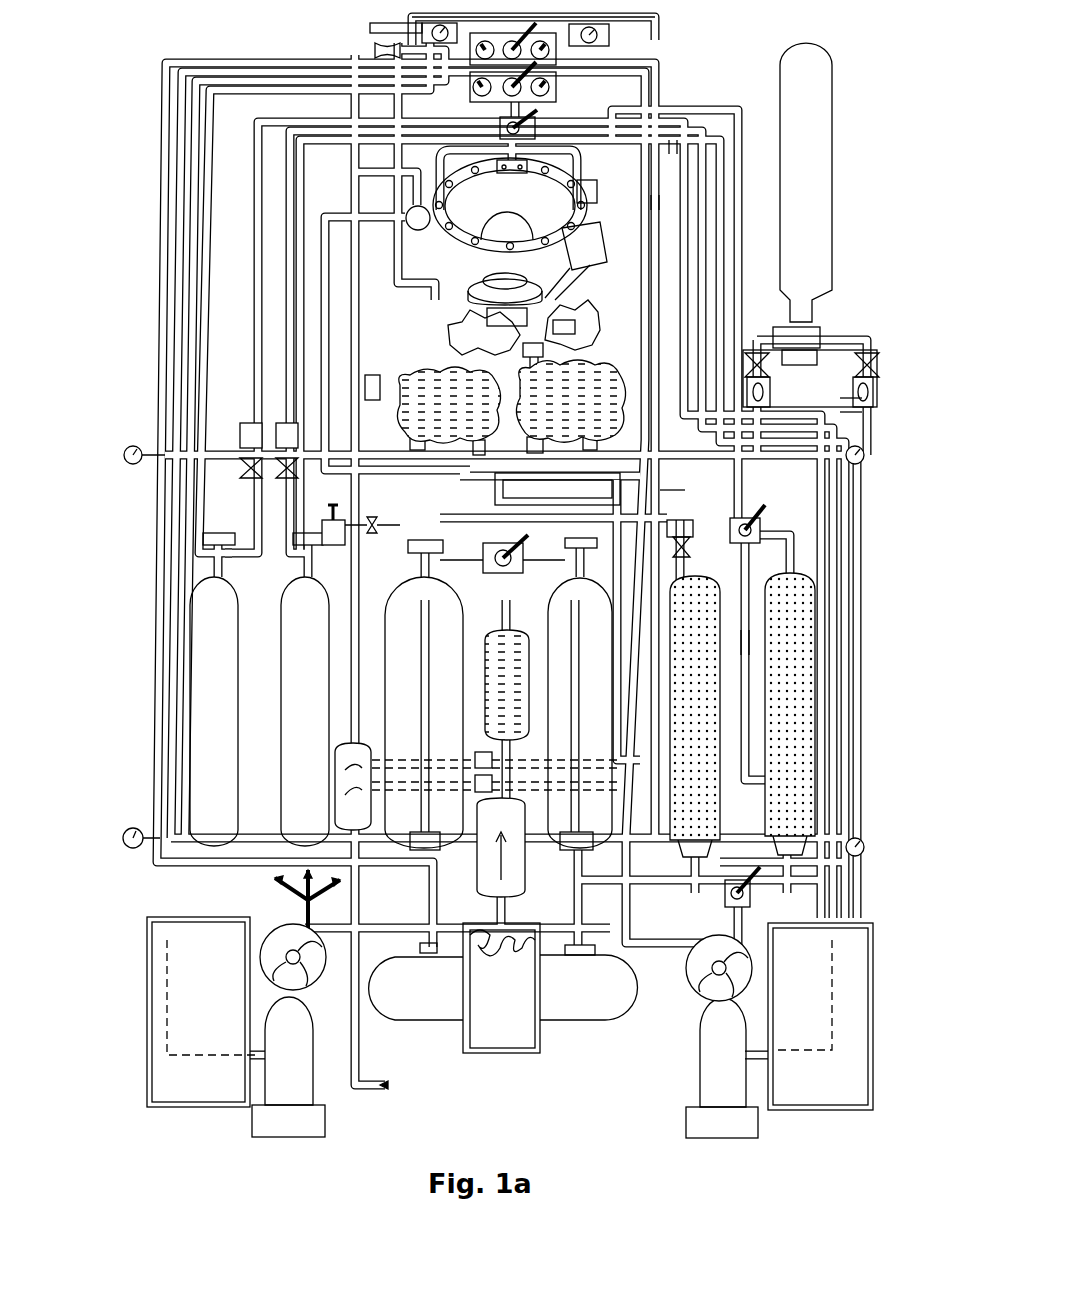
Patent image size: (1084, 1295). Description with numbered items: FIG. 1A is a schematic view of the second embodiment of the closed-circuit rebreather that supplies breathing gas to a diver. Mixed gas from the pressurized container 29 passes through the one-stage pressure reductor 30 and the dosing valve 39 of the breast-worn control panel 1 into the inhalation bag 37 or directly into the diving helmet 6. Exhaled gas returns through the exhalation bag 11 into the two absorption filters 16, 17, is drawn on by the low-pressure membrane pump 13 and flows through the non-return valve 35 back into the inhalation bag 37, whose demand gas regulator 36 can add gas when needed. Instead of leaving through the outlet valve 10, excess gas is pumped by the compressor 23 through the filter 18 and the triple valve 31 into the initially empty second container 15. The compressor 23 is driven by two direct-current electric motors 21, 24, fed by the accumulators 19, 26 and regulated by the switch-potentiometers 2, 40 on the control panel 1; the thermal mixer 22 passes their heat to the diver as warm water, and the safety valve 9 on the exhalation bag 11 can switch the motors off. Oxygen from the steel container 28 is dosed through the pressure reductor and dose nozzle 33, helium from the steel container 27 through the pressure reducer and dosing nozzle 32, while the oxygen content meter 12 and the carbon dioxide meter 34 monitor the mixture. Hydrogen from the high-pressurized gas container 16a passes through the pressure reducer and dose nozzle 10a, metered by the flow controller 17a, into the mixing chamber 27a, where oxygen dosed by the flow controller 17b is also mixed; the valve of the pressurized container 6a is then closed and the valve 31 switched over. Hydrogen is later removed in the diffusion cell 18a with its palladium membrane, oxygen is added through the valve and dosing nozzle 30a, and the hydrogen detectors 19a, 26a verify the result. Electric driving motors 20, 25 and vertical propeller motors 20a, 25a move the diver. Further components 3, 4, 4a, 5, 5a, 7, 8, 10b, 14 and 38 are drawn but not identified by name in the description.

The control panel 1 is at (470, 17).
The switch-potentiometer 2 is at (612, 43).
The upper gauge and valve unit 3 is at (557, 55).
The lower gauge and valve unit 4 is at (557, 85).
The supply line 4a is at (673, 147).
The shut-off valve 5 is at (553, 137).
The line 5a is at (655, 202).
The diving helmet 6 is at (563, 222).
The pressurized container 6a is at (800, 250).
The helmet neck ring 7 is at (540, 315).
The connecting piece 8 is at (563, 330).
The safety valve 9 is at (765, 342).
The outlet valve 10 is at (870, 362).
The one-stage pressure-reducer and dose-nozzle 10a is at (772, 388).
The valve body 10b is at (862, 386).
The exhalation bag 11 is at (862, 396).
The oxygen content sensor and meter 12 is at (862, 410).
The low-pressure membrane pump 13 is at (672, 490).
The valve 14 is at (745, 525).
The second mixed gas container 15 is at (587, 610).
The absorption filter 16 is at (797, 612).
The high-pressurized gas container 16a is at (752, 642).
The absorption filter 17 is at (700, 722).
The flow-controller 17a is at (493, 785).
The flow-controller 17b is at (493, 763).
The filter 18 is at (515, 698).
The diffusion cell 18a is at (513, 860).
The accumulator 19 is at (812, 957).
The hydrogen detector 19a is at (861, 855).
The electric driving motor 20 is at (737, 1080).
The vertical electrically-driven motor with propeller 20a is at (700, 982).
The electric motor 21 is at (593, 1007).
The thermal mixer 22 is at (518, 1010).
The compressor 23 is at (538, 1055).
The electric motor 24 is at (433, 998).
The electric driving motor 25 is at (280, 1068).
The vertical electrically-driven motor with propeller 25a is at (305, 980).
The accumulator 26 is at (183, 957).
The hydrogen detector 26a is at (133, 825).
The steel container 27 is at (207, 770).
The mixing chamber 27a is at (340, 789).
The highly-pressurized steel container 28 is at (300, 757).
The pressurized container 29 is at (430, 653).
The one-stage pressure reductor 30 is at (500, 553).
The valve and dosing nozzle 30a is at (383, 520).
The triple valve 31 is at (363, 518).
The pressure reducer and dosing-nozzle 32 is at (247, 437).
The pressure-reductor and dose-nozzle 33 is at (287, 440).
The CO2 sensor and meter 34 is at (413, 443).
The non-return valve 35 is at (367, 390).
The demand gas regulator 36 is at (455, 338).
The inhalation bag 37 is at (470, 383).
The chamber 38 is at (480, 330).
The dosing valve 39 is at (376, 48).
The switch-potentiometer 40 is at (370, 26).